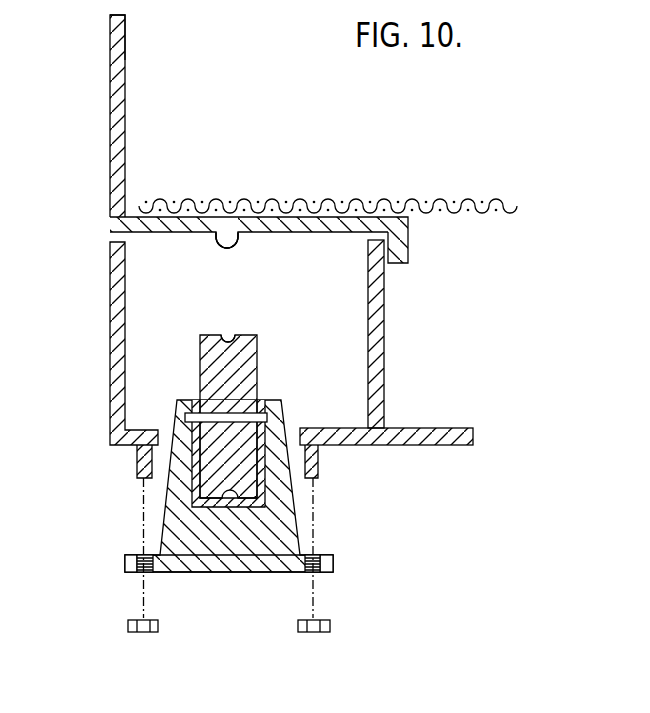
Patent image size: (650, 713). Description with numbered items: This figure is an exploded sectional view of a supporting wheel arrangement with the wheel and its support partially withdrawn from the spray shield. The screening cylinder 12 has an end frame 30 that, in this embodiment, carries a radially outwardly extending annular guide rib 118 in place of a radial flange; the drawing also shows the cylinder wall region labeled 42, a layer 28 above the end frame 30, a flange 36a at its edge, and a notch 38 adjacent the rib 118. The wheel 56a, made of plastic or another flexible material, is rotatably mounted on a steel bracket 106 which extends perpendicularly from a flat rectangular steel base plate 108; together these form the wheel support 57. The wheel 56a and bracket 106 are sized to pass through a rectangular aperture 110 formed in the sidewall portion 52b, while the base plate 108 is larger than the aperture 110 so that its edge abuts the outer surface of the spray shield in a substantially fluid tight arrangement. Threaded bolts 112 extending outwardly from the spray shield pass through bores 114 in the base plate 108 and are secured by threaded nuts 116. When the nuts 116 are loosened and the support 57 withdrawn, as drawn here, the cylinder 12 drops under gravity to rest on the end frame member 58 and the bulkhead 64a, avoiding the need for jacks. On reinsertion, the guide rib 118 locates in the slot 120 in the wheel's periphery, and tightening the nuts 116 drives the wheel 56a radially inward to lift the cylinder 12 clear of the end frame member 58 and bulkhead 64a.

The screening cylinder 12 is at (127, 140).
The upper edge of side wall 42 is at (126, 57).
The end frame 30 is at (330, 226).
The carpet layer 28 is at (497, 204).
The plate flange 36a is at (406, 246).
The channel notch 38 is at (195, 233).
The annular guide rib 118 is at (240, 242).
The end frame member 58 is at (110, 250).
The bulkhead 64a is at (386, 327).
The sidewall portion 52b is at (470, 432).
The threaded bolts 112 is at (138, 464).
The wheel support 57 is at (220, 557).
The base plate 108 is at (333, 565).
The bracket 106 is at (168, 490).
The wheel 56a is at (250, 368).
The slot 120 is at (232, 336).
The rectangular aperture 110 is at (175, 414).
The bores 114 is at (140, 573).
The threaded nuts 116 is at (130, 632).